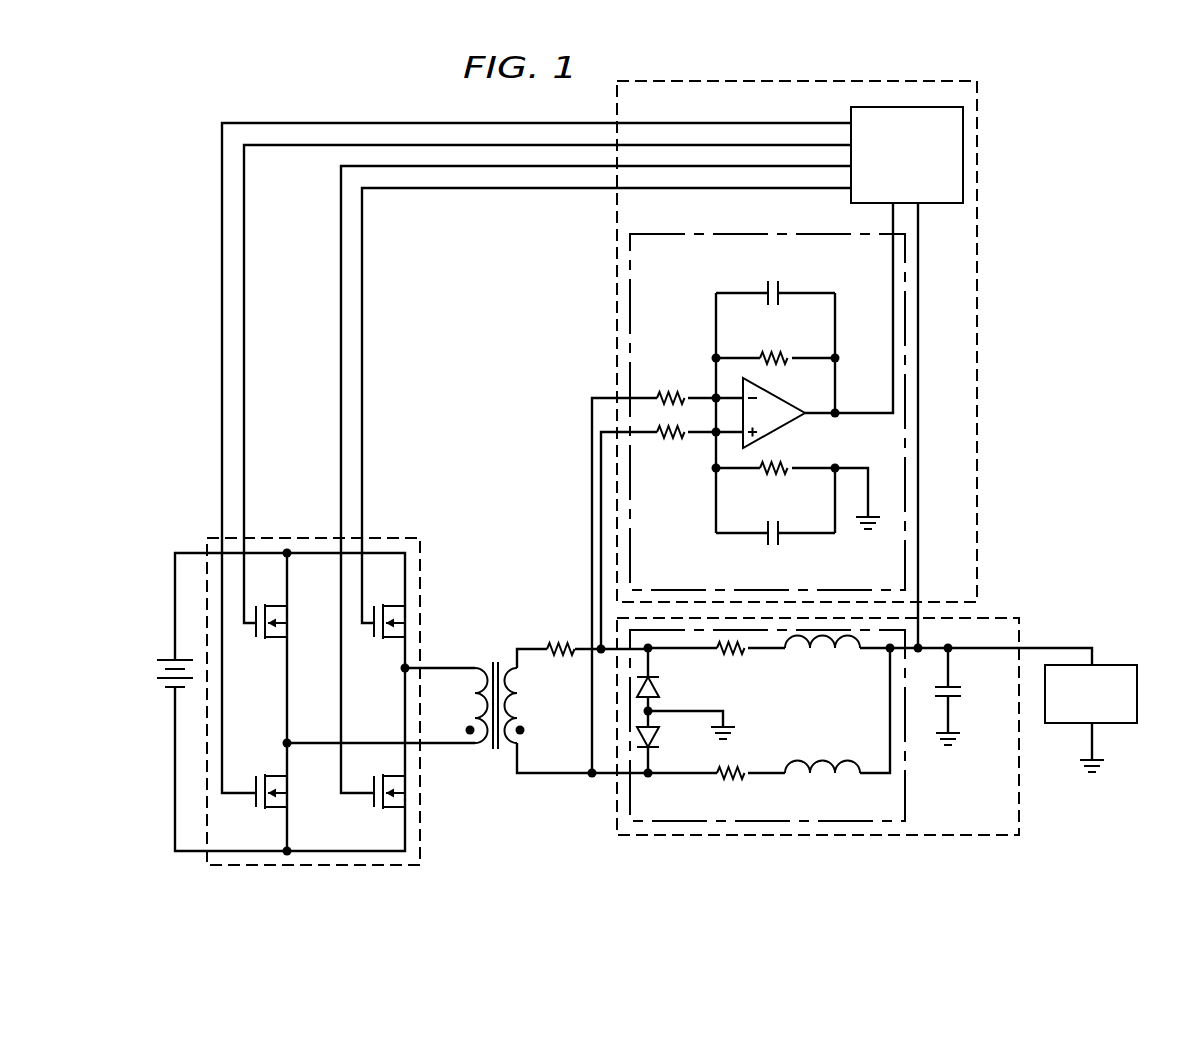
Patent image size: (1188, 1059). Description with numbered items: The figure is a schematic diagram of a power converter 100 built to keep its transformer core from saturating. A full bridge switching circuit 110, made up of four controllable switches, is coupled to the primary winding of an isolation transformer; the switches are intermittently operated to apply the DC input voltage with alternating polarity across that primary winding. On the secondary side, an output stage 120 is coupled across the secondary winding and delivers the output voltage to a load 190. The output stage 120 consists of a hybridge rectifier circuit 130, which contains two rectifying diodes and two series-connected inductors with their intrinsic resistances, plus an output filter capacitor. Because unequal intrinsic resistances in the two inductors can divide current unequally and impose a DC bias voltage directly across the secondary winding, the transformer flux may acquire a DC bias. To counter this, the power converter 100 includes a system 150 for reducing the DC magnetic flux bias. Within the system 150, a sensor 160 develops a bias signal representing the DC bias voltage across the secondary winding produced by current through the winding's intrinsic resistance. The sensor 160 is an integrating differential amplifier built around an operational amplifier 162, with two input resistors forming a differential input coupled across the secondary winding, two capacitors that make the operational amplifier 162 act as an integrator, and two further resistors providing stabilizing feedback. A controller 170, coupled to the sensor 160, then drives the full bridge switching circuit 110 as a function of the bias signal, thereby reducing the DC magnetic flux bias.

The power converter 100 is at (258, 100).
The full bridge switching circuit 110 is at (404, 538).
The output stage 120 is at (1019, 820).
The hybridge rectifier circuit 130 is at (905, 805).
The system for reducing the DC magnetic flux bias 150 is at (978, 96).
The sensor 160 is at (647, 234).
The operational amplifier 162 is at (780, 427).
The controller 170 is at (851, 107).
The load 190 is at (1121, 665).